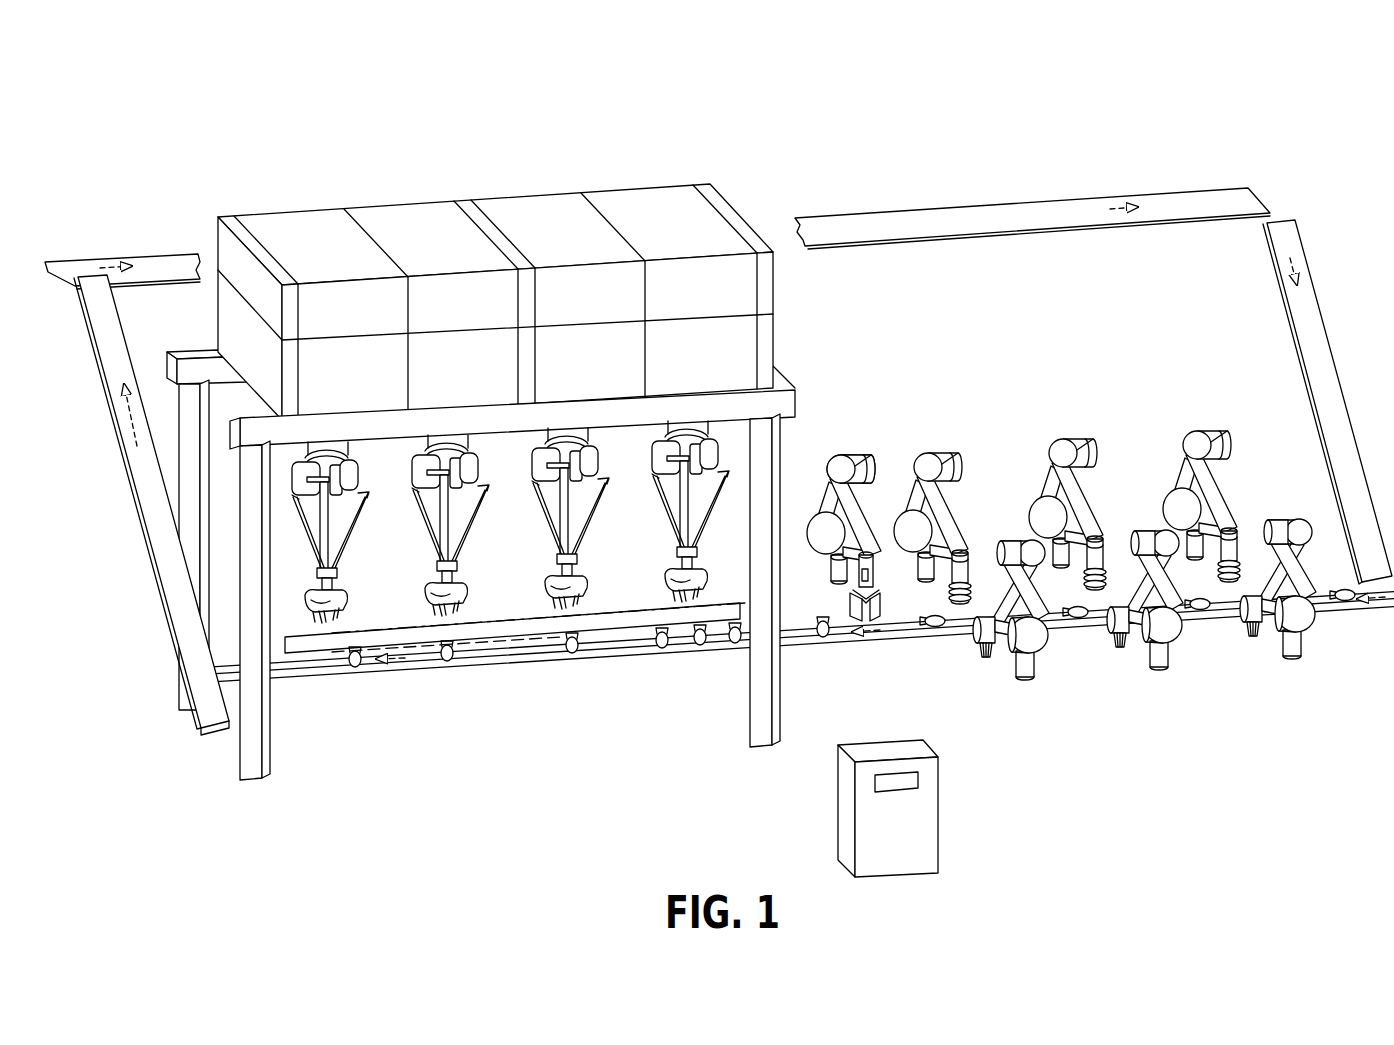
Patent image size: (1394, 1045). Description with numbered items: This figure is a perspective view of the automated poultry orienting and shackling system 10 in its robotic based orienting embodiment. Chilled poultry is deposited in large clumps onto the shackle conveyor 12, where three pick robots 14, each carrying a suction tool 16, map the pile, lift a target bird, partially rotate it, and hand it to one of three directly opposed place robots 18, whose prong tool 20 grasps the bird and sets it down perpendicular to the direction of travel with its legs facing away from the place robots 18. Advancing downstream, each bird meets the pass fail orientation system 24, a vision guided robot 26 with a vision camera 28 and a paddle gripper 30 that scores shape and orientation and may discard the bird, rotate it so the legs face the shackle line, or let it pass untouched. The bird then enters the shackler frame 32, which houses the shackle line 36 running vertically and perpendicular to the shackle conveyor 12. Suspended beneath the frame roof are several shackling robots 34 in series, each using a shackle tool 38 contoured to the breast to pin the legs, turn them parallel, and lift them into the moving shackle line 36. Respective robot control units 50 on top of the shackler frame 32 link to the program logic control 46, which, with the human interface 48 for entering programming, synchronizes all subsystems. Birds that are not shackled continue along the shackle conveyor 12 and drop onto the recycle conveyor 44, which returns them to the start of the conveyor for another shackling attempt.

The automated poultry orienting and shackling system 10 is at (725, 96).
The shackle conveyor 12 is at (323, 678).
The pick robot 14 is at (1067, 526).
The suction tool 16 is at (960, 603).
The place robot 18 is at (1154, 630).
The prong tool 20 is at (989, 660).
The pass fail orientation system 24 is at (861, 503).
The vision guided robot 26 is at (862, 455).
The vision camera 28 is at (882, 599).
The paddle gripper 30 is at (875, 622).
The shackler frame 32 is at (238, 636).
The shackling robots 34 is at (350, 558).
The shackle line 36 is at (503, 640).
The shackle tool 38 is at (343, 600).
The recycle conveyor 44 is at (1320, 375).
The program logic control 46 is at (912, 808).
The human interface 48 is at (918, 781).
The robot control units 50 is at (302, 222).